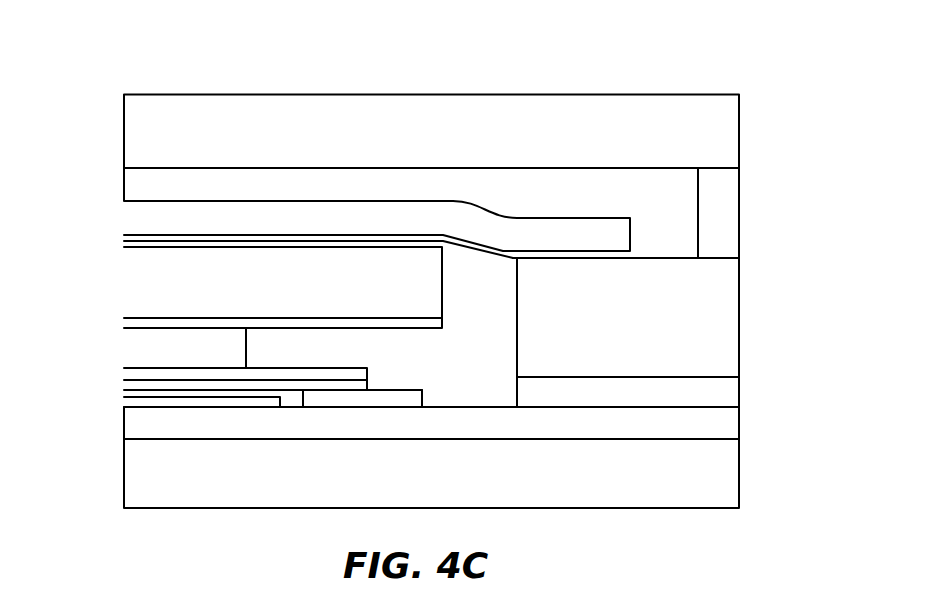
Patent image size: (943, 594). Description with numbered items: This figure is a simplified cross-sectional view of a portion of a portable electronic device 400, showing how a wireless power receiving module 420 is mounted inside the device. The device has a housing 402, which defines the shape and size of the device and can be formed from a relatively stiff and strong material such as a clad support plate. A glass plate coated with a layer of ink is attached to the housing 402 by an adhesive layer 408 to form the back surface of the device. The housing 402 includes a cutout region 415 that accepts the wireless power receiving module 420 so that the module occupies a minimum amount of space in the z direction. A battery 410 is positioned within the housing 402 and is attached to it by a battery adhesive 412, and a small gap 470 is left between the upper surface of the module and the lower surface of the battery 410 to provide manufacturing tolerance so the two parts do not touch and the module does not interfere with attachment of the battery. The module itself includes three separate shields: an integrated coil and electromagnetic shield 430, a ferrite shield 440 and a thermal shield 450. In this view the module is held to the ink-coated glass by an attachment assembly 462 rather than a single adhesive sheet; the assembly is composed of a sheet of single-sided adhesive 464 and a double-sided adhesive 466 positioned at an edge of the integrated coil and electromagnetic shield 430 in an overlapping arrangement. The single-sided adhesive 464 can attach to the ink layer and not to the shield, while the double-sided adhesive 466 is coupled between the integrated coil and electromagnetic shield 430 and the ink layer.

The electronic device 400 is at (213, 52).
The housing 402 is at (739, 315).
The adhesive layer 408 is at (739, 393).
The battery 410 is at (739, 135).
The battery adhesive 412 is at (739, 215).
The cutout region 415 is at (609, 171).
The wireless power receiving module 420 is at (405, 121).
The integrated coil and electromagnetic shield 430 is at (118, 332).
The ferrite shield 440 is at (118, 247).
The thermal shield 450 is at (118, 202).
The attachment assembly 462 is at (108, 406).
The single-sided adhesive 464 is at (175, 444).
The double-sided adhesive 466 is at (343, 474).
The gap 470 is at (123, 178).